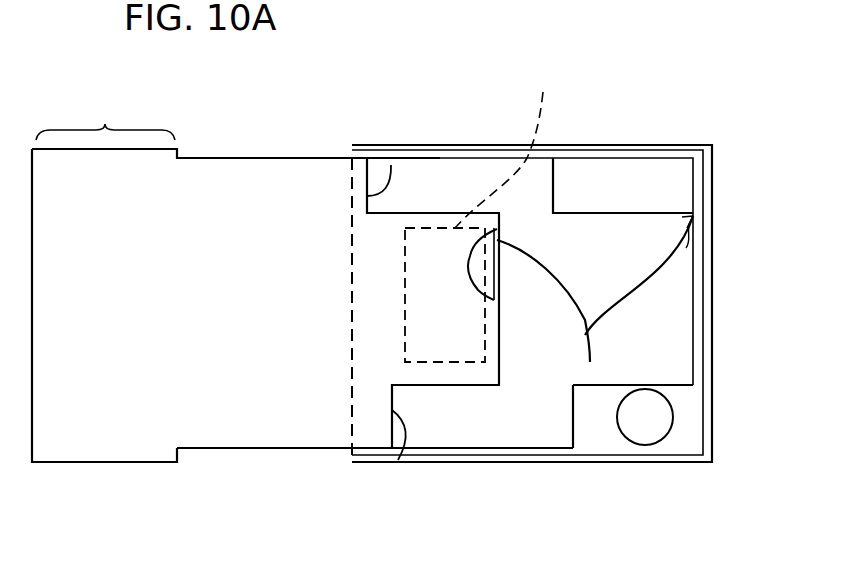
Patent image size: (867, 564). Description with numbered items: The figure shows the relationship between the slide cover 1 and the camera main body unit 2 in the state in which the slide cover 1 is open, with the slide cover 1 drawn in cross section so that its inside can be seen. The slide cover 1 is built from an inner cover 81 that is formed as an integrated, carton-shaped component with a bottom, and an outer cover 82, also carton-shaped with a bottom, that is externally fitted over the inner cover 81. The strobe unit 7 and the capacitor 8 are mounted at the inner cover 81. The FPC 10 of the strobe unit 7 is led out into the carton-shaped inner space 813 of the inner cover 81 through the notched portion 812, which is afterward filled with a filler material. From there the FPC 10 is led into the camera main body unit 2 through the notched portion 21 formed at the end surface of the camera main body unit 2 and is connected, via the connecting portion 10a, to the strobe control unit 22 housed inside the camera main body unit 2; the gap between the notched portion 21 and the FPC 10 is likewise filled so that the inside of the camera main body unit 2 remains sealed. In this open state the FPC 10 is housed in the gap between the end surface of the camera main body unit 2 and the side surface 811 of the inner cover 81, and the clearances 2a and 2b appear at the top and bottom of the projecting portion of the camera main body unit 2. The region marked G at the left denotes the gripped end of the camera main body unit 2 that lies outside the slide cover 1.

The slide cover 1 is at (470, 145).
The camera main body unit 2 is at (272, 156).
The grip portion G is at (105, 115).
The clearance 2a is at (391, 165).
The clearance 2b is at (398, 460).
The strobe unit 7 is at (612, 185).
The strobe control unit 22 is at (509, 144).
The connecting portion 10a is at (470, 285).
The notched portion 21 is at (498, 245).
The FPC 10 is at (586, 338).
The notched portion 812 is at (700, 241).
The side surface 811 is at (700, 290).
The carton-shaped inner space 813 is at (660, 338).
The capacitor 8 is at (660, 413).
The outer cover 82 is at (472, 462).
The inner cover 81 is at (533, 455).